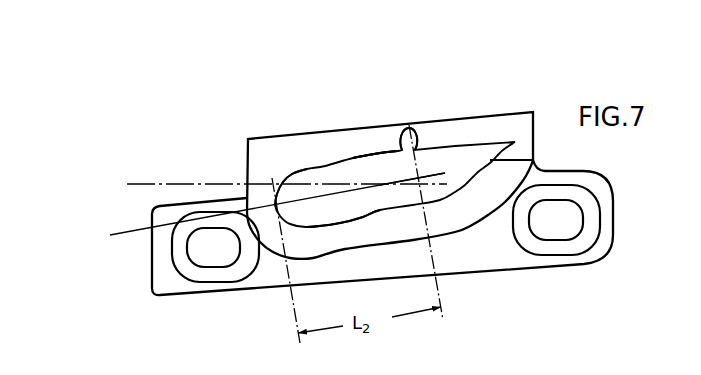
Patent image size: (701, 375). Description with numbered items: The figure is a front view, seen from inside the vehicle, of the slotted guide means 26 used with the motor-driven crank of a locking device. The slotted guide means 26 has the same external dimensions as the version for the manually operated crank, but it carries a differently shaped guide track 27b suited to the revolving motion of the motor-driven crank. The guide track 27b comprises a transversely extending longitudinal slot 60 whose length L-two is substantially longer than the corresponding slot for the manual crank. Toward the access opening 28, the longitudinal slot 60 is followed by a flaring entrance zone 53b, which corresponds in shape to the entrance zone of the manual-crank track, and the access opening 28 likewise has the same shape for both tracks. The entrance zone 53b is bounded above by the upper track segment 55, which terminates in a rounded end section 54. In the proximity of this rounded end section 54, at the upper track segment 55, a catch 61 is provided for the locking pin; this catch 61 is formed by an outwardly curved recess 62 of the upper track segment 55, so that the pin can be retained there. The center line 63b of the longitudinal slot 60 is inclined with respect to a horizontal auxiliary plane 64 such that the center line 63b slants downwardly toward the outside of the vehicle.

The slotted guide means 26 is at (226, 297).
The access opening 28 is at (478, 136).
The upper track segment 55 is at (353, 152).
The longitudinal slot 60 is at (323, 180).
The catch 61 is at (382, 157).
The outwardly curved recess 62 is at (383, 147).
The rounded end section 54 is at (417, 131).
The entrance zone 53b is at (432, 172).
The guide track 27b is at (352, 226).
The center line 63b is at (132, 232).
The horizontal auxiliary plane 64 is at (171, 182).